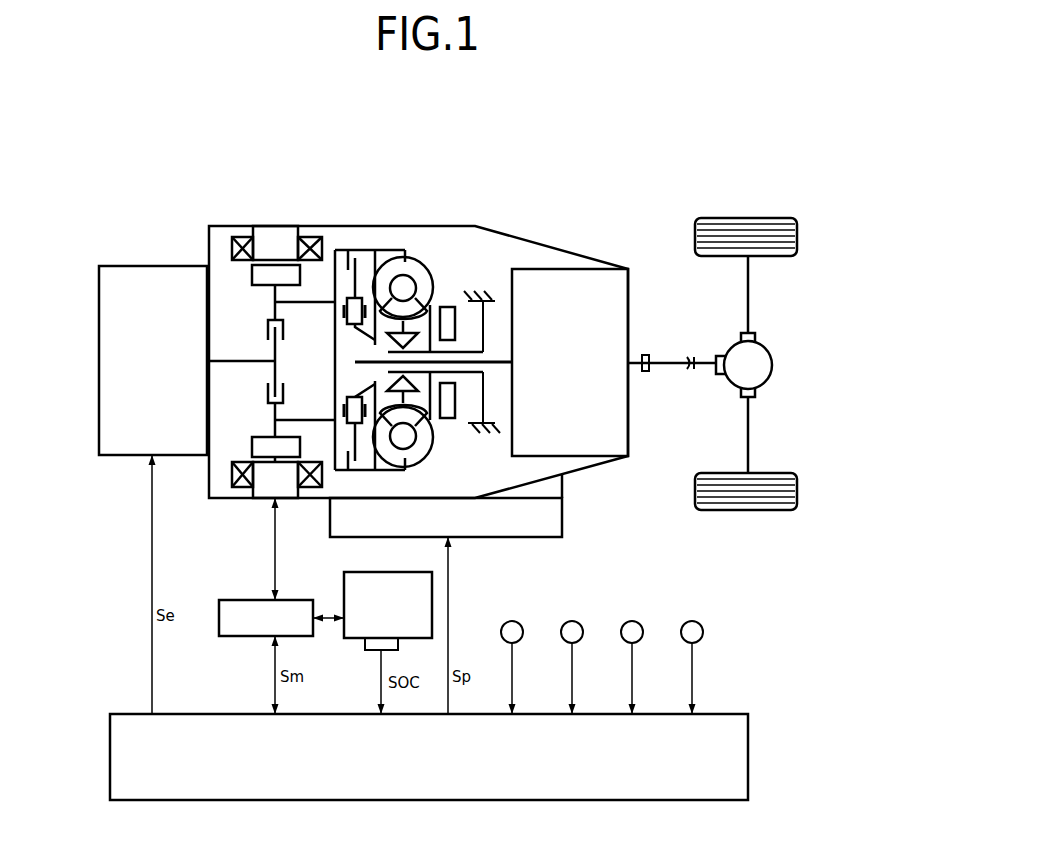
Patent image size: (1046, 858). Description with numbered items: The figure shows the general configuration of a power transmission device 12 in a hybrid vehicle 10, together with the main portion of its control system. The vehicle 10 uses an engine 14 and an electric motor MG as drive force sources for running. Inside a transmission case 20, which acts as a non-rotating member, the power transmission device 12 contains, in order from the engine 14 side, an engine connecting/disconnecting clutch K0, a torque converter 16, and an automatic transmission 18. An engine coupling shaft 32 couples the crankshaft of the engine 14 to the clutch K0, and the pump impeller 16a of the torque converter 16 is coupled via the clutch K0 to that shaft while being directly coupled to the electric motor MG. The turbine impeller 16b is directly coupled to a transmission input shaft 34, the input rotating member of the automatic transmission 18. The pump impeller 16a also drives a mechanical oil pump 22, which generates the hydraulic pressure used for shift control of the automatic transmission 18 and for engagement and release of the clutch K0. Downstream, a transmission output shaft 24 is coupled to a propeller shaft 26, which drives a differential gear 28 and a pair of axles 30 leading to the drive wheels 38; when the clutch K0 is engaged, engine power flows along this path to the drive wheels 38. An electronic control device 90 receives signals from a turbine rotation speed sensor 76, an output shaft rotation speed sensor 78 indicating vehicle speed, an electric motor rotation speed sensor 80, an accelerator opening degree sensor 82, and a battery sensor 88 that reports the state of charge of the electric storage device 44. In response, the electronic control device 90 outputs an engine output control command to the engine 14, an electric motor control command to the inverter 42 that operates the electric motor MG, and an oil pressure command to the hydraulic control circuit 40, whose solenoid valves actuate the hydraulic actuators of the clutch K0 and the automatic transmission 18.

The vehicle 10 is at (576, 147).
The power transmission device 12 is at (410, 185).
The engine 14 is at (122, 270).
The torque converter 16 is at (432, 259).
The pump impeller 16a is at (420, 450).
The turbine impeller 16b is at (381, 447).
The automatic transmission 18 is at (617, 316).
The transmission case 20 is at (432, 226).
The mechanical oil pump 22 is at (450, 418).
The transmission output shaft 24 is at (636, 356).
The propeller shaft 26 is at (670, 367).
The differential gear 28 is at (762, 350).
The axles 30 is at (746, 295).
The engine coupling shaft 32 is at (241, 360).
The transmission input shaft 34 is at (495, 365).
The drive wheels 38 is at (695, 236).
The hydraulic control circuit 40 is at (562, 505).
The inverter 42 is at (221, 634).
The electric storage device 44 is at (352, 572).
The turbine rotation speed sensor 76 is at (513, 621).
The output shaft rotation speed sensor 78 is at (573, 621).
The electric motor rotation speed sensor 80 is at (633, 621).
The accelerator opening degree sensor 82 is at (693, 621).
The battery sensor 88 is at (366, 646).
The electronic control device 90 is at (735, 730).
The engine connecting/disconnecting clutch K0 is at (283, 397).